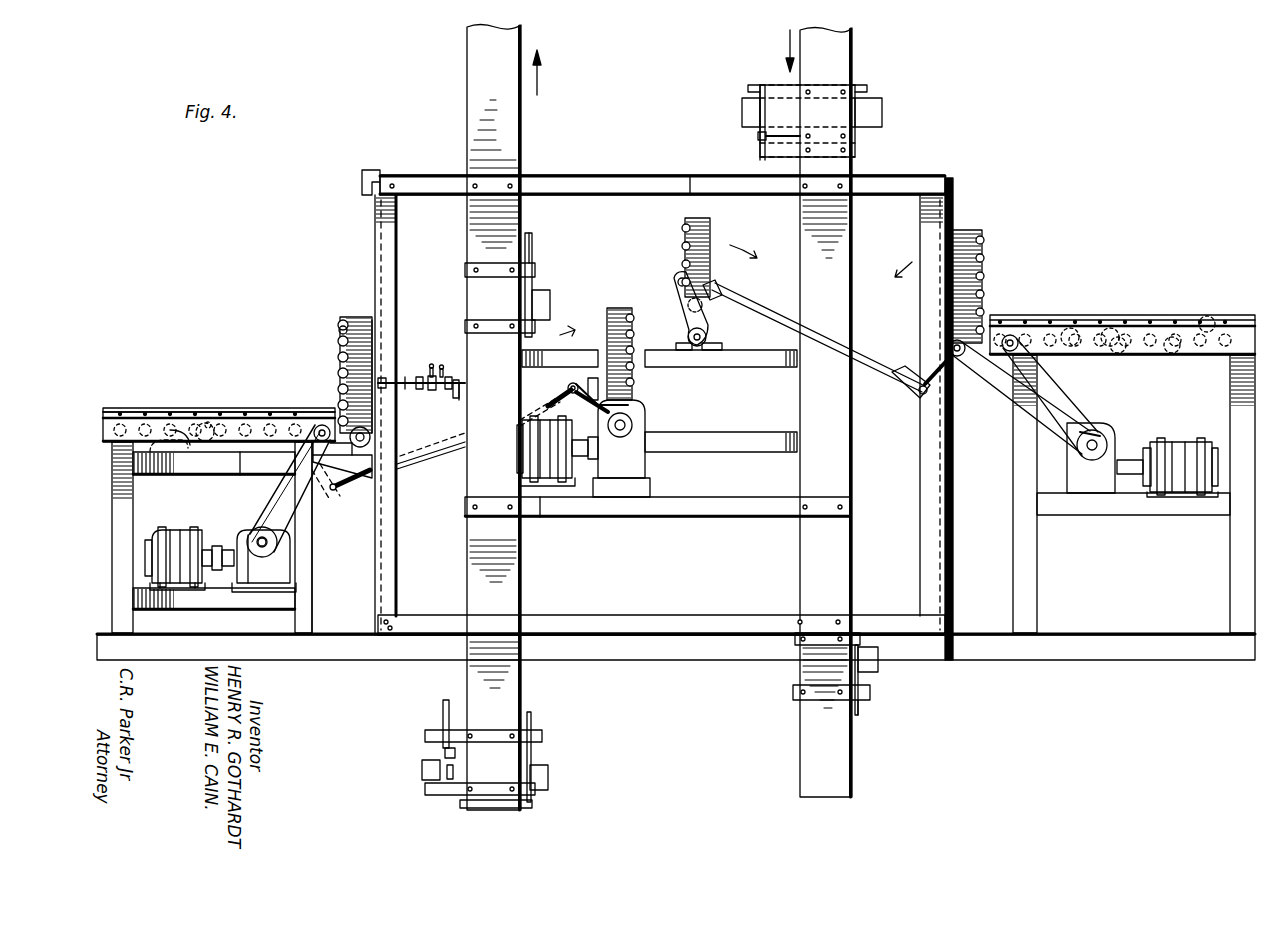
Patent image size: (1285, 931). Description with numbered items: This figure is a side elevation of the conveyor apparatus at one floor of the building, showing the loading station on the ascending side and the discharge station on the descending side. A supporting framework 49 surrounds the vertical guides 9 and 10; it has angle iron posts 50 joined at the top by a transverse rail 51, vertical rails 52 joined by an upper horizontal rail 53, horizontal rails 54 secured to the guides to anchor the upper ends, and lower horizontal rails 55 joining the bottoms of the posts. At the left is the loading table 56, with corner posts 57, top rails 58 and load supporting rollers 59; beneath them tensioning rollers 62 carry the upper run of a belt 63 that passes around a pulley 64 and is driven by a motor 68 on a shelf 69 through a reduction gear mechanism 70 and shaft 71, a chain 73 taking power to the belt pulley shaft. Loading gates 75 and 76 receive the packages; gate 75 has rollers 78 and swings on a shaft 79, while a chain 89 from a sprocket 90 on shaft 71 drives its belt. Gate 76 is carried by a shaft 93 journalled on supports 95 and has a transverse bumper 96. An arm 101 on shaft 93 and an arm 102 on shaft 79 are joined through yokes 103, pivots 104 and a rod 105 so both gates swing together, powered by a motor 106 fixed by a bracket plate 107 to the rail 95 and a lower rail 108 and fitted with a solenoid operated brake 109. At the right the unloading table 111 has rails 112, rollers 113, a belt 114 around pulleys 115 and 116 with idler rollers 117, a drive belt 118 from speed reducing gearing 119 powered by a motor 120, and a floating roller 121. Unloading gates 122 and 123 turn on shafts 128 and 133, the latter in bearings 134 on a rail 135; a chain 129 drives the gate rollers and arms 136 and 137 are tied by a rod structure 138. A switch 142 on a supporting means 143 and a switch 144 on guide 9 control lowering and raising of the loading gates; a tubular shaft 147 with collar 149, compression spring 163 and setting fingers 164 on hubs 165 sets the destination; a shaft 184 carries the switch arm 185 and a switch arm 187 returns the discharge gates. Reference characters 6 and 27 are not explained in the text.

The conveyor belt 6 is at (158, 409).
The guide 9 is at (467, 78).
The guide 10 is at (855, 62).
The chain guide 27 is at (374, 336).
The supporting framework 49 is at (630, 175).
The vertical angle iron post 50 is at (375, 238).
The transverse rail 51 is at (370, 170).
The vertical rail 52 is at (920, 480).
The upper horizontal rail 53 is at (955, 180).
The horizontal rail 54 is at (690, 176).
The lower horizontal rail 55 is at (640, 615).
The loading table 56 is at (312, 540).
The vertical corner post 57 is at (313, 606).
The parallel rail 58 is at (130, 412).
The load supporting roller 59 is at (207, 422).
The tensioning roller 62 is at (190, 446).
The belt 63 is at (240, 476).
The pulley 64 is at (272, 412).
The motor 68 is at (180, 530).
The shelf 69 is at (256, 610).
The reduction gear mechanism 70 is at (252, 530).
The shaft 71 is at (262, 557).
The chain 73 is at (283, 492).
The loading gate 75 is at (350, 316).
The loading gate 76 is at (610, 304).
The load supporting roller 78 is at (338, 330).
The shaft 79 is at (371, 436).
The chain 89 is at (322, 494).
The sprocket 90 is at (270, 545).
The shaft 93 is at (640, 417).
The support 95 is at (703, 438).
The transverse bumper 96 is at (600, 387).
The arm 101 is at (592, 396).
The arm 102 is at (372, 450).
The yoke 103 is at (345, 487).
The pivot 104 is at (573, 388).
The rod 105 is at (448, 455).
The motor 106 is at (530, 452).
The bracket plate 107 is at (543, 512).
The lower rail 108 is at (670, 510).
The solenoid operated brake 109 is at (600, 466).
The table 111 is at (1040, 568).
The rail 112 is at (1148, 318).
The load supporting roller 113 is at (1110, 326).
The belt 114 is at (1070, 326).
The pulley 115 is at (984, 375).
The pulley 116 is at (1176, 358).
The idler roller 117 is at (1125, 360).
The belt 118 is at (1090, 428).
The speed reducing gearing 119 is at (1115, 435).
The motor 120 is at (1183, 442).
The floating roller 121 is at (1206, 316).
The gate 122 is at (968, 229).
The gate 123 is at (712, 231).
The shaft 128 is at (949, 346).
The chain 129 is at (1000, 402).
The shaft 133 is at (688, 337).
The bearing 134 is at (715, 343).
The rail 135 is at (737, 368).
The arm 136 is at (930, 378).
The arm 137 is at (674, 288).
The rod structure 138 is at (755, 312).
The switch 142 is at (447, 700).
The supporting means 143 is at (425, 735).
The switch 144 is at (533, 243).
The tubular shaft 147 is at (440, 390).
The collar 149 is at (458, 400).
The compression spring 163 is at (421, 376).
The setting finger 164 is at (443, 362).
The hub 165 is at (431, 366).
The shaft 184 is at (786, 128).
The switch arm 185 is at (760, 152).
The switch arm 187 is at (858, 715).